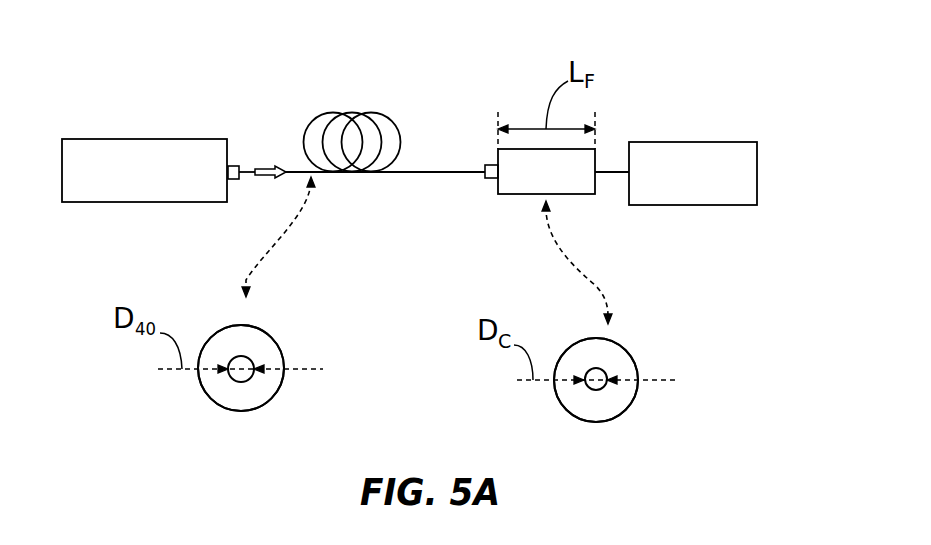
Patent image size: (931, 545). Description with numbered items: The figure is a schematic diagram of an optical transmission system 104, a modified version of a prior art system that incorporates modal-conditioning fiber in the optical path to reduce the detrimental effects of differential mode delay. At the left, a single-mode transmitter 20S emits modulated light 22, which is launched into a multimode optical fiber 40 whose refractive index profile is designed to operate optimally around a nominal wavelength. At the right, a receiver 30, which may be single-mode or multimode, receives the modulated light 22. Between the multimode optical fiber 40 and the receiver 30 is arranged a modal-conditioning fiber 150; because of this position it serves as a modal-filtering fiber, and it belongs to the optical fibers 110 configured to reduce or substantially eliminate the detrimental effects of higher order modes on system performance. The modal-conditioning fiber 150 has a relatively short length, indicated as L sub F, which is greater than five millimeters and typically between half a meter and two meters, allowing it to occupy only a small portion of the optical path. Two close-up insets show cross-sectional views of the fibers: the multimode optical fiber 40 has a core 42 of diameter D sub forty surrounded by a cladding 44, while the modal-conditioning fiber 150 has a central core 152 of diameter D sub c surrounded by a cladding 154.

The optical transmission system 104 is at (162, 82).
The single-mode transmitter 20S is at (165, 186).
The modulated light 22 is at (266, 170).
The multimode optical fiber 40 is at (419, 171).
The cladding 44 is at (222, 346).
The core 42 is at (245, 374).
The modal-conditioning fiber 150 is at (567, 186).
The cladding 154 is at (576, 358).
The central core 152 is at (599, 386).
The optical fibers 110 is at (630, 95).
The receiver 30 is at (707, 186).